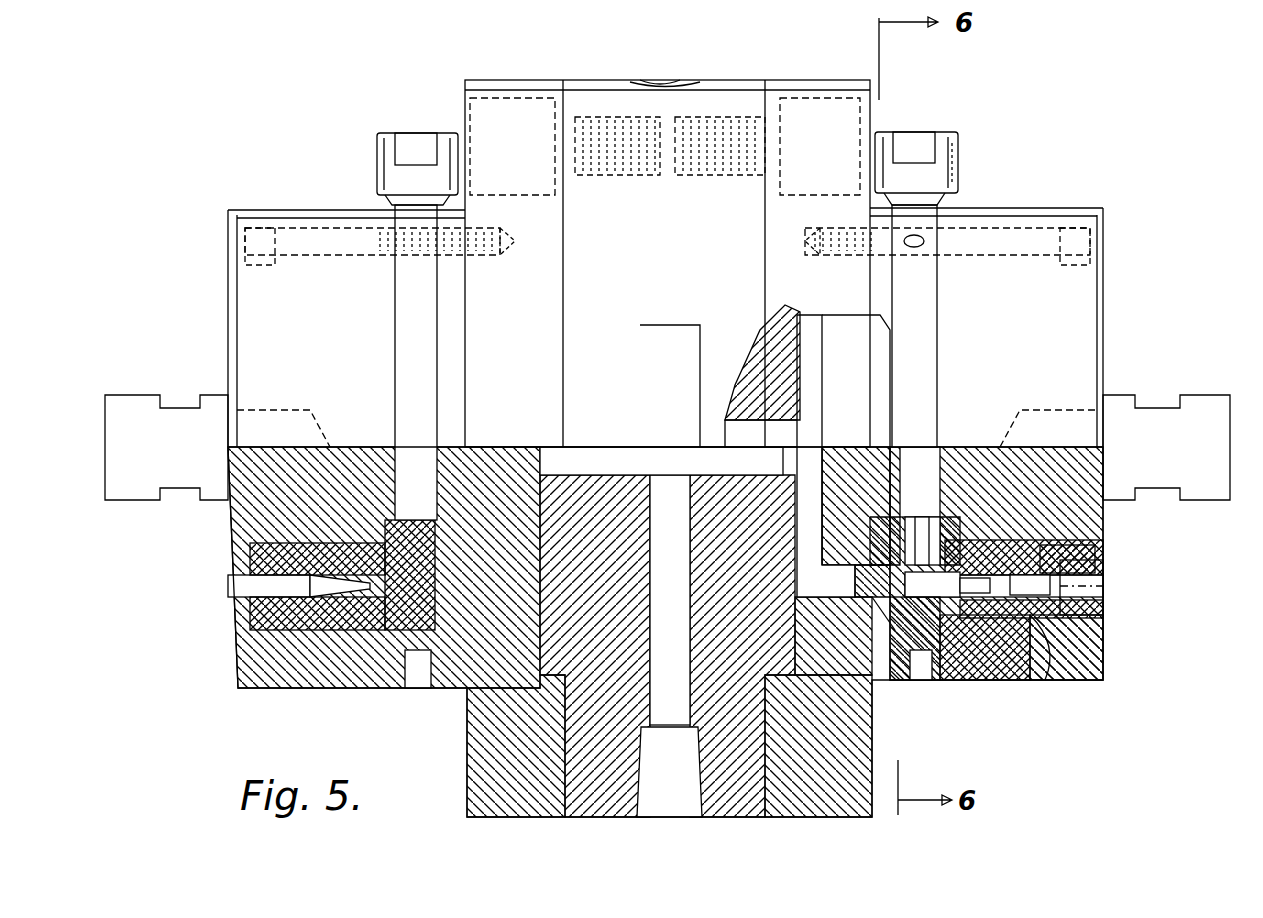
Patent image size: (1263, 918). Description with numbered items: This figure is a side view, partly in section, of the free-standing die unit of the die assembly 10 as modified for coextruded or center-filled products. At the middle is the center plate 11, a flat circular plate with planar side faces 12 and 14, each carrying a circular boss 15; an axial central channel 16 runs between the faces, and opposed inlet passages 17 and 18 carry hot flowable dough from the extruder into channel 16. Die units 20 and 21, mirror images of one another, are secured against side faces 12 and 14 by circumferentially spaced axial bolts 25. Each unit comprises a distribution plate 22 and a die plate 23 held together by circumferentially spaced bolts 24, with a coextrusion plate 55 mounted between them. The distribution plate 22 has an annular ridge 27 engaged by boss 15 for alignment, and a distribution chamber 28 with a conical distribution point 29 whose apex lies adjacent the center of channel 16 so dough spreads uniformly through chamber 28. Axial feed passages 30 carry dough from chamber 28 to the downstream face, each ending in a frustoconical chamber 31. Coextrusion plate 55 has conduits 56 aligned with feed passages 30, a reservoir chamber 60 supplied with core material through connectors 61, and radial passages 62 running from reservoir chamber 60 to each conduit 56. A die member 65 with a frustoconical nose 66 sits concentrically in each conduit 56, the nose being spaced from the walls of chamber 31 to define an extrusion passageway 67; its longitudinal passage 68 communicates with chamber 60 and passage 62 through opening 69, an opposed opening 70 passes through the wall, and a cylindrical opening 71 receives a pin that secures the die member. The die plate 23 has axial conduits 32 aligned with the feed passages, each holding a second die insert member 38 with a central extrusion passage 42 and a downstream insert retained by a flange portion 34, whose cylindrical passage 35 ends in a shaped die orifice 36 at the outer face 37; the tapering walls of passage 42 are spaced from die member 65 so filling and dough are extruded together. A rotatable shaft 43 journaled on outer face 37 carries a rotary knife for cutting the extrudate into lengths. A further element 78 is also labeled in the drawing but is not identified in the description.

The die assembly 10 is at (425, 33).
The center plate 11 is at (735, 80).
The planar side face 12 is at (785, 817).
The planar side face 14 is at (550, 817).
The circular boss 15 is at (800, 522).
The axial central channel 16 is at (738, 469).
The inlet passage 17 is at (680, 80).
The inlet passage 18 is at (678, 816).
The die unit 20 is at (995, 137).
The die unit 21 is at (360, 140).
The distribution plate 22 is at (486, 80).
The die plate 23 is at (320, 212).
The bolts 24 is at (255, 272).
The axial bolts 25 is at (850, 120).
The annular ridge 27 is at (780, 667).
The distribution chamber 28 is at (775, 338).
The conical distribution point 29 is at (805, 442).
The axial feed passages 30 is at (836, 593).
The frustoconical chamber 31 is at (856, 506).
The axial conduits 32 is at (1030, 680).
The flange portion 34 is at (1060, 545).
The cylindrical passage 35 is at (1090, 576).
The die orifice 36 is at (1100, 586).
The outer face 37 is at (1103, 318).
The second die insert member 38 is at (1055, 545).
The central extrusion passage 42 is at (977, 584).
The rotatable shaft 43 is at (1224, 395).
The coextrusion plate 55 is at (400, 315).
The conduits 56 is at (936, 630).
The reservoir chamber 60 is at (932, 473).
The connectors 61 is at (958, 178).
The passages 62 is at (910, 537).
The die member 65 is at (960, 560).
The frustoconical nose 66 is at (870, 590).
The extrusion passageway 67 is at (875, 620).
The longitudinal passage 68 is at (945, 608).
The opening 69 is at (935, 555).
The opening 70 is at (898, 640).
The cylindrical opening 71 is at (920, 680).
The insert 78 is at (1067, 557).